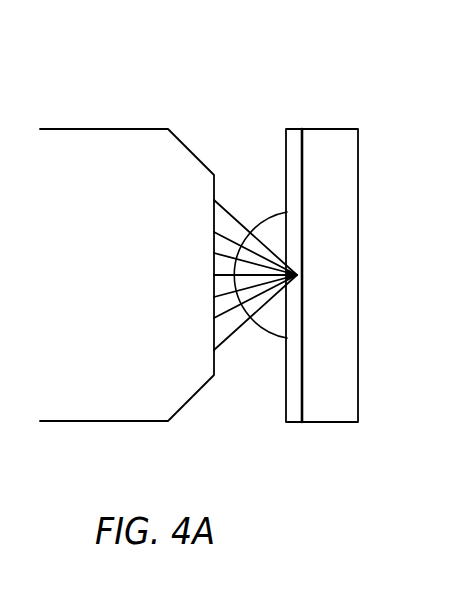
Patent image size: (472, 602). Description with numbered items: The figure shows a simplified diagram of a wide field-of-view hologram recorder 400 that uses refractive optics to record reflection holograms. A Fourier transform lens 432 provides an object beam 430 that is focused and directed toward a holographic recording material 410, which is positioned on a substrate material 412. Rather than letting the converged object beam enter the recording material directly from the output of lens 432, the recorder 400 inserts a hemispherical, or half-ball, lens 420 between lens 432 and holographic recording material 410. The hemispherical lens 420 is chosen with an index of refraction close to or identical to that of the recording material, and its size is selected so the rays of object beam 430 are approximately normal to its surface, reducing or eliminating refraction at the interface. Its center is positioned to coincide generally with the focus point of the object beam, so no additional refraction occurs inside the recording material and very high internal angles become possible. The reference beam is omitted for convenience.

The recorder 400 is at (145, 82).
The holographic recording material 410 is at (294, 134).
The substrate material 412 is at (352, 170).
The hemispherical lens 420 is at (269, 337).
The object beam 430 is at (232, 208).
The lens 432 is at (138, 344).